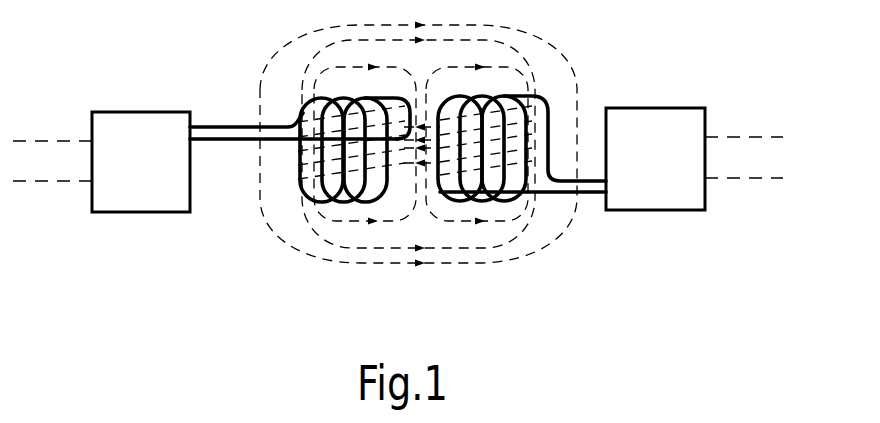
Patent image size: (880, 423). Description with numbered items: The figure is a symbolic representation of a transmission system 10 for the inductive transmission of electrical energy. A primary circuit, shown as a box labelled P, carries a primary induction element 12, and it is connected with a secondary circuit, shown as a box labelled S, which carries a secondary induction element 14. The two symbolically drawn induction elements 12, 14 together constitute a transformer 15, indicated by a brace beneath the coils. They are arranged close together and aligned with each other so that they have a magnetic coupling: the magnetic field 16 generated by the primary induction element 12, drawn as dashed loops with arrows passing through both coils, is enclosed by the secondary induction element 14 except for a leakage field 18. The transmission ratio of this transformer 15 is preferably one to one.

The transmission system 10 is at (657, 53).
The primary induction element 12 is at (300, 183).
The secondary induction element 14 is at (553, 135).
The transformer 15 is at (542, 305).
The magnetic field 16 is at (488, 32).
The leakage field 18 is at (342, 215).